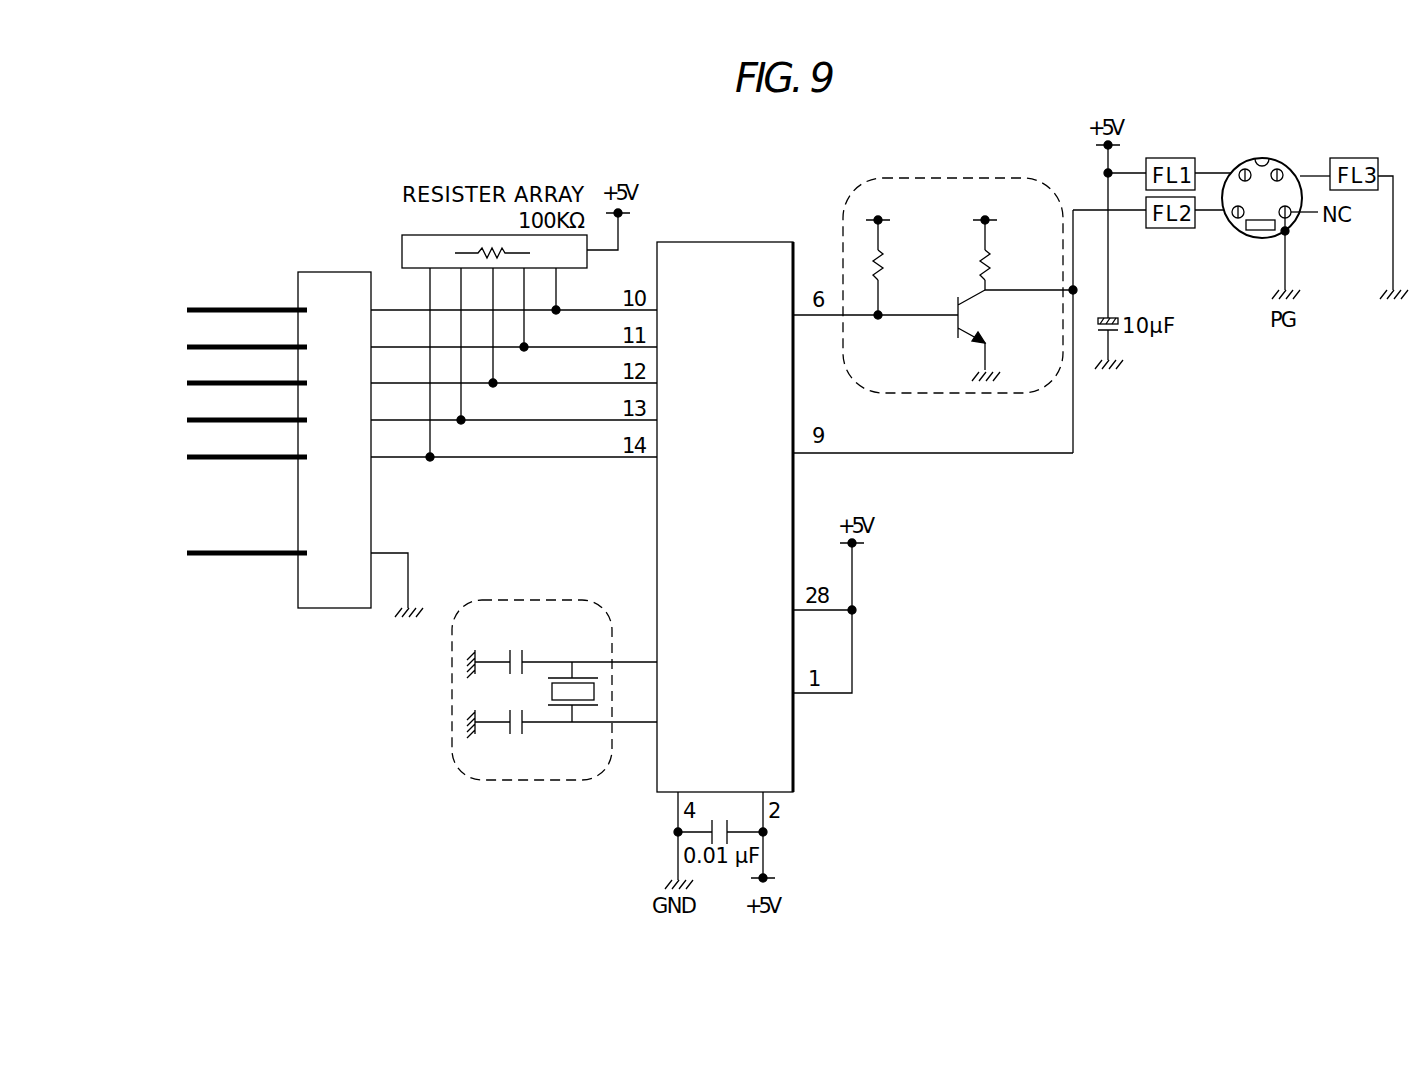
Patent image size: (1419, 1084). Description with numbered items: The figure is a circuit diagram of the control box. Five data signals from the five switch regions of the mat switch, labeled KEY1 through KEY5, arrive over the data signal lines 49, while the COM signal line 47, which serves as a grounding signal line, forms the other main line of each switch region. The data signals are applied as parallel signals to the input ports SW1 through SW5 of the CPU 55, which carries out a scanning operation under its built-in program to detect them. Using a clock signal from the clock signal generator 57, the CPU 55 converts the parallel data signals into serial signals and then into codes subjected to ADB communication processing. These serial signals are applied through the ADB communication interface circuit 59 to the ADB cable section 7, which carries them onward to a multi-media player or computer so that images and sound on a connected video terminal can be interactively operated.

The data signal line 49 is at (205, 312).
The COM signal line 47 is at (207, 556).
The CPU 55 is at (785, 243).
The clock signal generator 57 is at (552, 780).
The ADB communication interface circuit 59 is at (1000, 393).
The ADB cable section 7 is at (1252, 240).